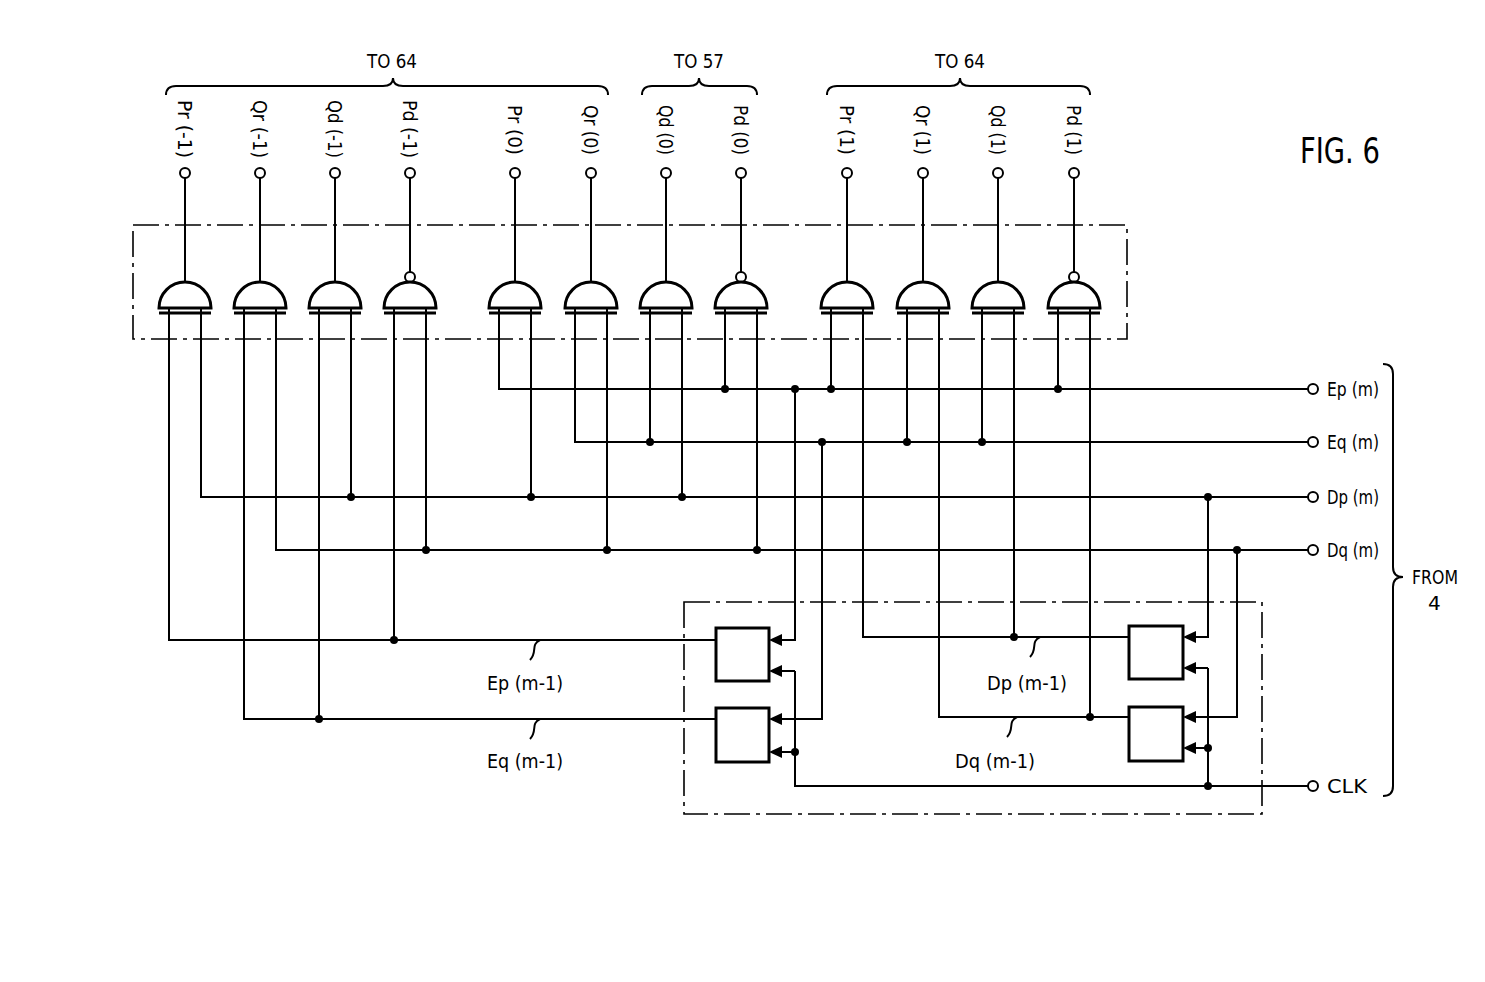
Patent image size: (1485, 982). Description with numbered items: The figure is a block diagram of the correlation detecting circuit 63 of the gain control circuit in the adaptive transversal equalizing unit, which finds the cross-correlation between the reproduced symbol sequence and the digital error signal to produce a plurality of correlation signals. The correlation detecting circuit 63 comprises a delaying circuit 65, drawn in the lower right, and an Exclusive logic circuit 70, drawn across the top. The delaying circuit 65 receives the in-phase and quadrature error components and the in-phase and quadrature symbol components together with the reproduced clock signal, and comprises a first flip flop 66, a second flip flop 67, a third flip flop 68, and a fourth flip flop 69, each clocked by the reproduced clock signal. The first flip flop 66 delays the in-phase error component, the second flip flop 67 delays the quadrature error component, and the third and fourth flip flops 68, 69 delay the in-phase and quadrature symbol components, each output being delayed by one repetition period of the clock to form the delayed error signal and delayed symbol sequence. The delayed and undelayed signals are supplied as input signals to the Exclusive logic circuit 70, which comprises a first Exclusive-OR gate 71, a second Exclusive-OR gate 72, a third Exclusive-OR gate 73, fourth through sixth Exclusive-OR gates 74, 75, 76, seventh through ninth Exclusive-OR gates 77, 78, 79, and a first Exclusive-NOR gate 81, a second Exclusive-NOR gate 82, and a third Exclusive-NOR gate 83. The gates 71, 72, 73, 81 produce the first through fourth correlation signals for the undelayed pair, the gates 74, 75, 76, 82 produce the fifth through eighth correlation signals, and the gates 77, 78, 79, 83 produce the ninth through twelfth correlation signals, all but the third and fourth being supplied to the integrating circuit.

The correlation detecting circuit 63 is at (347, 762).
The delaying circuit 65 is at (684, 797).
The first flip flop 66 is at (714, 668).
The second flip flop 67 is at (737, 762).
The third flip flop 68 is at (1128, 657).
The fourth flip flop 69 is at (1128, 743).
The Exclusive logic circuit 70 is at (1127, 256).
The first Exclusive-OR gate 71 is at (533, 284).
The second Exclusive-OR gate 72 is at (609, 284).
The third Exclusive-OR gate 73 is at (684, 284).
The fourth Exclusive-OR gate 74 is at (203, 284).
The fifth Exclusive-OR gate 75 is at (278, 284).
The sixth Exclusive-OR gate 76 is at (353, 284).
The seventh Exclusive-OR gate 77 is at (865, 284).
The eighth Exclusive-OR gate 78 is at (941, 284).
The ninth Exclusive-OR gate 79 is at (1016, 284).
The first Exclusive-NOR gate 81 is at (759, 284).
The second Exclusive-NOR gate 82 is at (428, 284).
The third Exclusive-NOR gate 83 is at (1092, 284).